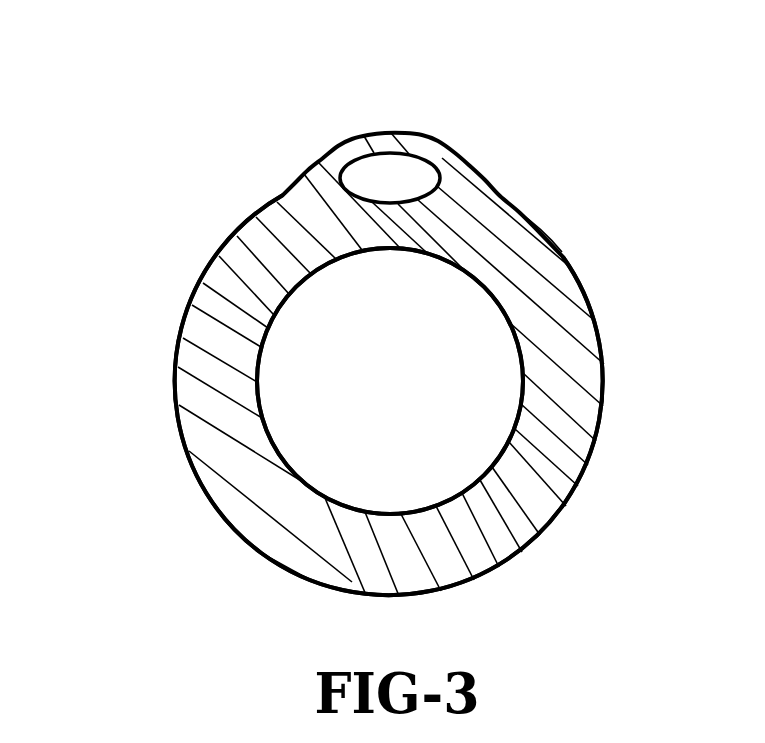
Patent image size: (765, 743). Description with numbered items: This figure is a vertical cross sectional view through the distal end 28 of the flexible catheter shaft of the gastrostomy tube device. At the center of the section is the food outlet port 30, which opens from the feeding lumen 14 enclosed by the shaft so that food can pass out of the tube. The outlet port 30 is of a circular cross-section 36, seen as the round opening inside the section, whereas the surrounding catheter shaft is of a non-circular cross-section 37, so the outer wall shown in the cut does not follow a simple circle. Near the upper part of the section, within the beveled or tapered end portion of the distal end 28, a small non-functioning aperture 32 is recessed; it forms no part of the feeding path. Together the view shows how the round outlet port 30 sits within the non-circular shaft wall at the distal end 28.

The feeding lumen 14 is at (373, 457).
The distal end 28 is at (547, 186).
The food outlet port 30 is at (420, 355).
The non-functioning aperture 32 is at (386, 171).
The circular cross-section 36 is at (508, 449).
The non-circular cross-section 37 is at (178, 348).